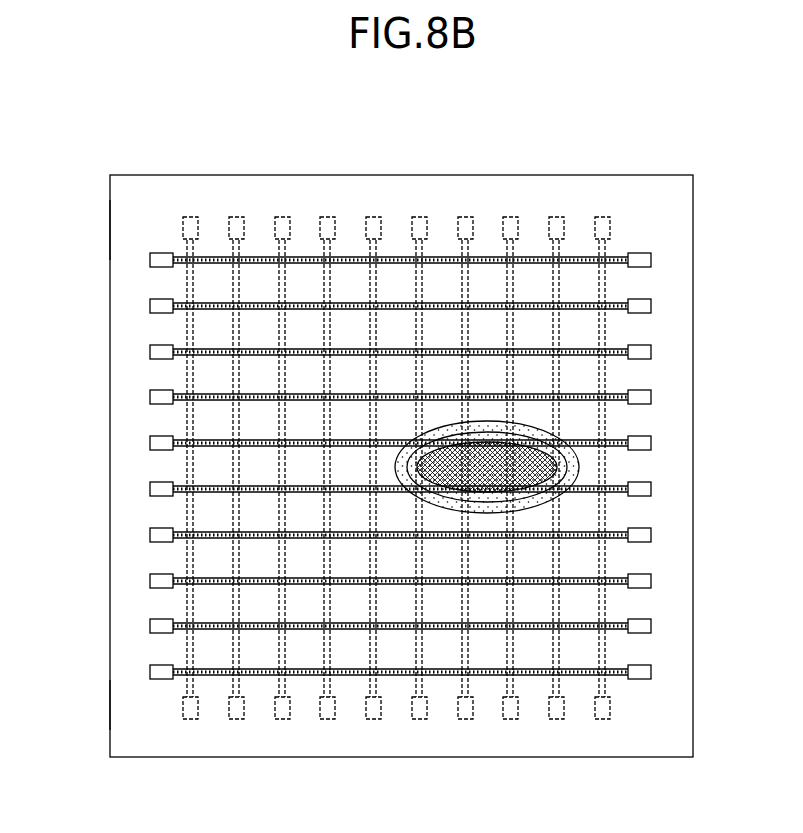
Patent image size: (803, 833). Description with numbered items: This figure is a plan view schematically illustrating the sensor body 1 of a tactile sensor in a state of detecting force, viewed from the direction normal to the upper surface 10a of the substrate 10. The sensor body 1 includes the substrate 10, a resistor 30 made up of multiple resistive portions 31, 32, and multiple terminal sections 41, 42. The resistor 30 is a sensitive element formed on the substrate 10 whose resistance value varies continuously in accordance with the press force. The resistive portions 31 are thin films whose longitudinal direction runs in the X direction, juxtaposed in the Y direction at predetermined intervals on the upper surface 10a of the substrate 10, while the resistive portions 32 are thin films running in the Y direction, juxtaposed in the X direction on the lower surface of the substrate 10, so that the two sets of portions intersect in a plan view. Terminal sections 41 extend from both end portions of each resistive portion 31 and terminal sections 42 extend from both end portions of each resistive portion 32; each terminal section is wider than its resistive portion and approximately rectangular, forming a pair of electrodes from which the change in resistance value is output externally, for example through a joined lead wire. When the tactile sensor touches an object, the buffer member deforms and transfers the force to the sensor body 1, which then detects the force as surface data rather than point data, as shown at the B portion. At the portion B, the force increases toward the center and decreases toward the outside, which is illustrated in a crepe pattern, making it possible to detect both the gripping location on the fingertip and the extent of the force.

The sensor body 1 is at (696, 172).
The substrate 10 is at (106, 229).
The upper surface of the substrate 10a is at (112, 700).
The resistor 30 is at (400, 398).
The resistive portions 31 is at (215, 257).
The resistive portions 32 is at (277, 248).
The terminal sections 41 is at (640, 254).
The terminal sections 42 is at (555, 215).
The B portion B is at (579, 465).